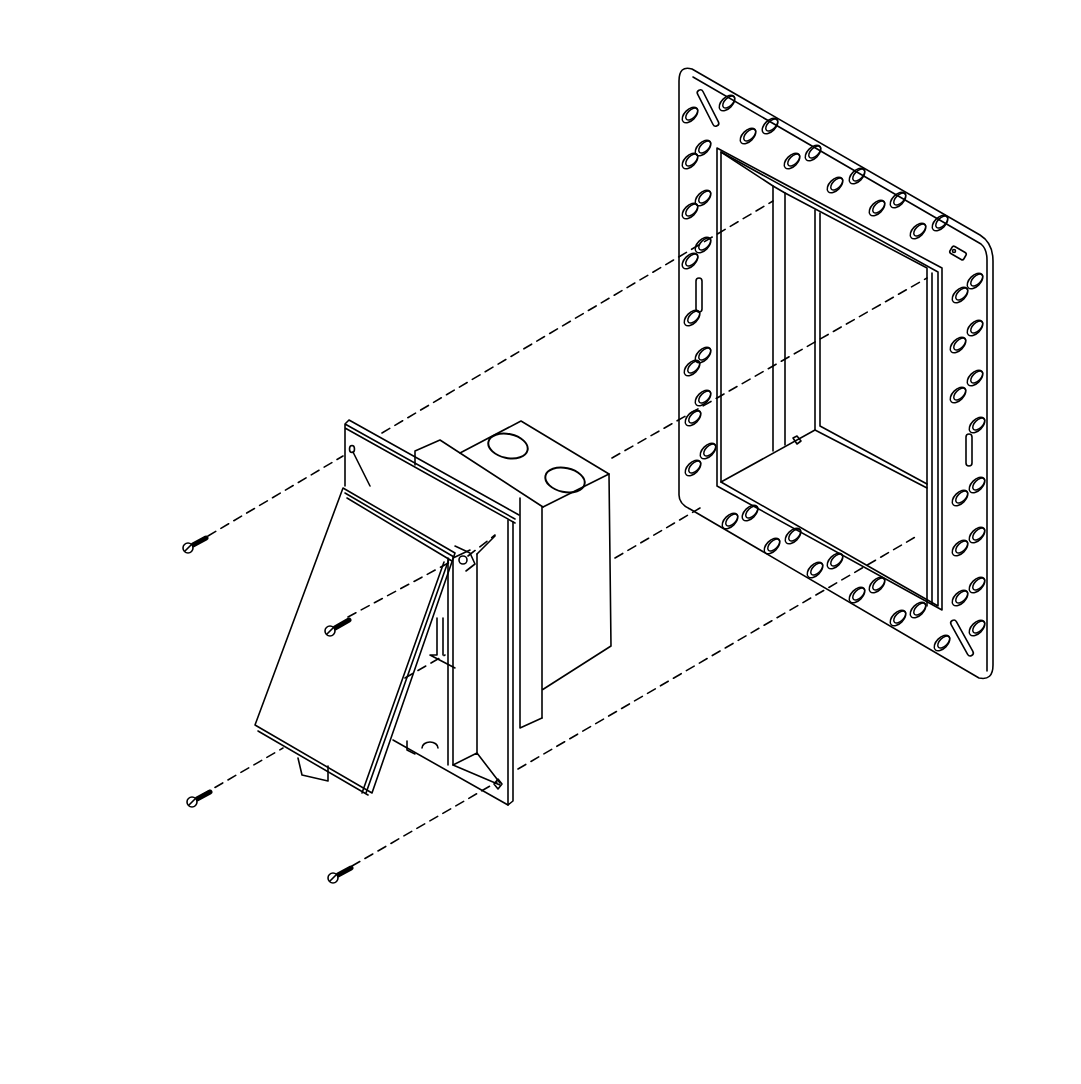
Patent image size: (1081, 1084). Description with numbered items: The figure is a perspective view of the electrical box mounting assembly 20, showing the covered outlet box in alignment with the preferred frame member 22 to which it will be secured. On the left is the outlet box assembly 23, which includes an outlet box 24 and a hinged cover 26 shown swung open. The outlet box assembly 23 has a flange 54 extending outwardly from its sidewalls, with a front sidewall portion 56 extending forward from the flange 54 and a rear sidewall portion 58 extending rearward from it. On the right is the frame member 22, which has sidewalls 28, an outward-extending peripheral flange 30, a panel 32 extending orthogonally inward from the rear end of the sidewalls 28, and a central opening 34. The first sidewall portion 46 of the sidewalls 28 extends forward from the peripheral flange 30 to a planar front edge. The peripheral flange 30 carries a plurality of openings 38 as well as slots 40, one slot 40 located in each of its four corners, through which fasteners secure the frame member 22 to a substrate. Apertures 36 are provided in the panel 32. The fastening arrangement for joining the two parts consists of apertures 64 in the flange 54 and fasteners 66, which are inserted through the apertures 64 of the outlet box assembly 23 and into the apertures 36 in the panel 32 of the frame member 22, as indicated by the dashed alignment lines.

The electrical box mounting assembly 20 is at (303, 251).
The frame member 22 is at (575, 192).
The outlet box assembly 23 is at (246, 443).
The outlet box 24 is at (503, 425).
The hinged cover 26 is at (345, 698).
The sidewalls 28 is at (759, 320).
The peripheral flange 30 is at (980, 357).
The panel 32 is at (811, 305).
The central opening 34 is at (891, 355).
The apertures 36 is at (797, 440).
The openings 38 is at (806, 570).
The slots 40 is at (958, 665).
The first sidewall portion 46 is at (940, 437).
The flange 54 is at (503, 626).
The front sidewall portion 56 is at (476, 688).
The rear sidewall portion 58 is at (541, 611).
The apertures 64 is at (348, 449).
The fasteners 66 is at (186, 545).